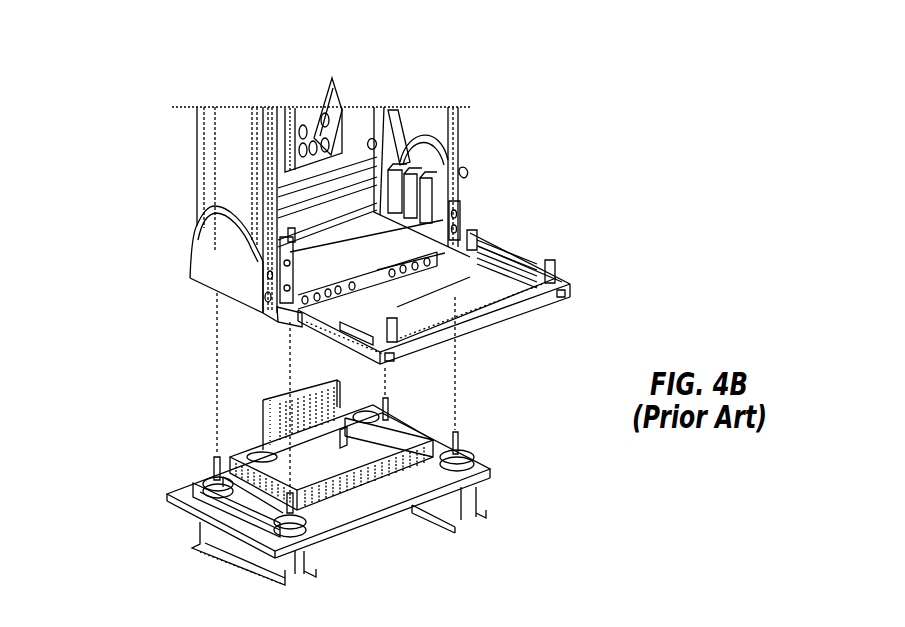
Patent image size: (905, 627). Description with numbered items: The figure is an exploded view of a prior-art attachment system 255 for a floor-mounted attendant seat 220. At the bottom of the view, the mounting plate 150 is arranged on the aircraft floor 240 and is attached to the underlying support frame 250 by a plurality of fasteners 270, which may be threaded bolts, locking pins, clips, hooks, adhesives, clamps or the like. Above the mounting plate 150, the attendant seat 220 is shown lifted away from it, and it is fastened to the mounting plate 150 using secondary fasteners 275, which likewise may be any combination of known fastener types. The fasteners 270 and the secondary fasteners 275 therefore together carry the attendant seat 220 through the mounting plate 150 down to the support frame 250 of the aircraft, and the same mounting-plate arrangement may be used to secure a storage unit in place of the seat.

The attachment system 255 is at (170, 62).
The attendant seat 220 is at (210, 150).
The secondary fasteners 275 is at (371, 141).
The mounting plate 150 is at (258, 447).
The fasteners 270 is at (393, 405).
The aircraft floor 240 is at (493, 475).
The support frame 250 is at (452, 527).